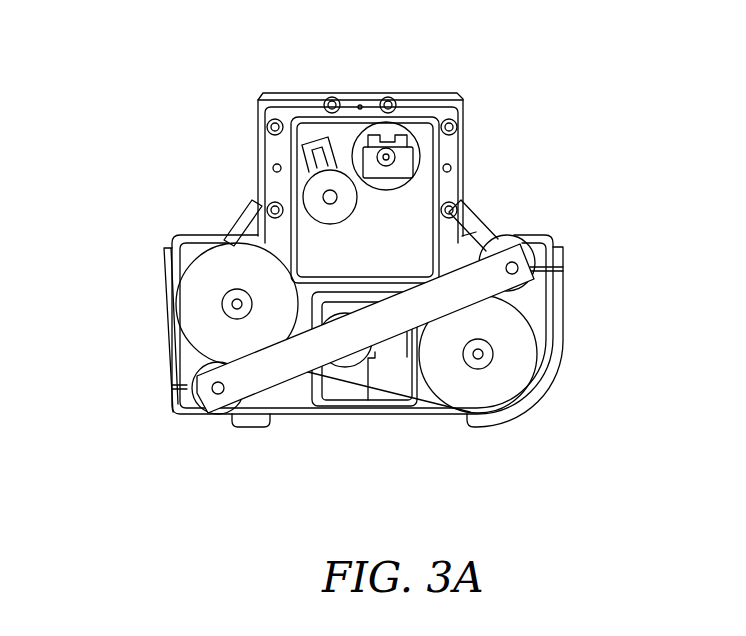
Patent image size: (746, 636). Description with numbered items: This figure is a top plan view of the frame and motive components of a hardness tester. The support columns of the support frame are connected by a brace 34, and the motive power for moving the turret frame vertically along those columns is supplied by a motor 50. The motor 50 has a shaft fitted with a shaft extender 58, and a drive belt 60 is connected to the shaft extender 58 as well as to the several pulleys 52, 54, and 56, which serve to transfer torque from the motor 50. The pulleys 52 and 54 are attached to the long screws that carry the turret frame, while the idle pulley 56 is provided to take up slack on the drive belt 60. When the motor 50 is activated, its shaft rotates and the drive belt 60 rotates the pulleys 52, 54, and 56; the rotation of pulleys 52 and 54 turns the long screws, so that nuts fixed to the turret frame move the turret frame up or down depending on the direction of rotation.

The brace 34 is at (285, 365).
The motor 50 is at (417, 168).
The pulley 52 is at (203, 287).
The pulley 54 is at (510, 363).
The idle pulley 56 is at (312, 200).
The shaft extender 58 is at (387, 150).
The drive belt 60 is at (468, 236).